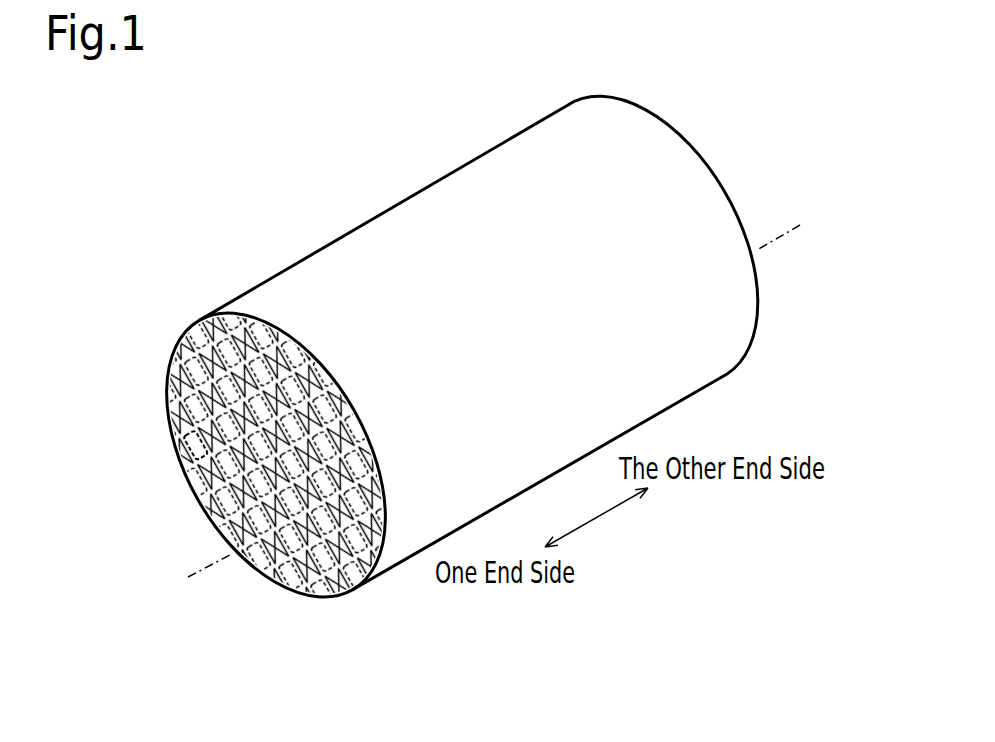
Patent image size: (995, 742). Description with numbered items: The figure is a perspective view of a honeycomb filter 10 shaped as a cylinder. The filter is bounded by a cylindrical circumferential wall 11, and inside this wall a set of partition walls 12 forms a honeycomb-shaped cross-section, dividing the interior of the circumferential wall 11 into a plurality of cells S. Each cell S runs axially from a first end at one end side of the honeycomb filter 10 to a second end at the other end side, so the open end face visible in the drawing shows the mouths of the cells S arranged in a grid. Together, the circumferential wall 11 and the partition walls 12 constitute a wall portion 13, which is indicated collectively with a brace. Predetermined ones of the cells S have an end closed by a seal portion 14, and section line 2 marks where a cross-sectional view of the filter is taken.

The honeycomb filter 10 is at (405, 160).
The seal portion 14 is at (185, 356).
The cell S is at (199, 438).
The wall portion 13 is at (250, 455).
The partition walls 12 is at (275, 455).
The circumferential wall 11 is at (117, 453).
The line 2- 2 is at (188, 577).